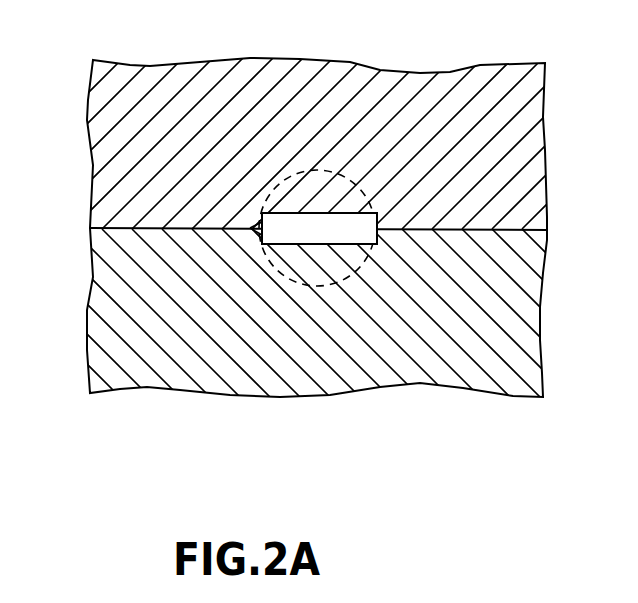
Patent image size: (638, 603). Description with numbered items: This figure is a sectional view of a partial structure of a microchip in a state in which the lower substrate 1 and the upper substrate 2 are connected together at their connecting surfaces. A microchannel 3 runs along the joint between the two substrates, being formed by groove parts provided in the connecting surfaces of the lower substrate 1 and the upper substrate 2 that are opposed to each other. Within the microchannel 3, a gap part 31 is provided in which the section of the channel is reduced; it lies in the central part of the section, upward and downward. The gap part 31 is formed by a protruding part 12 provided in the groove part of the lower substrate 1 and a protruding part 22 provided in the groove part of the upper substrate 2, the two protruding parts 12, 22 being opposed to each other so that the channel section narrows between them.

The lower substrate 1 is at (319, 319).
The upper substrate 2 is at (319, 139).
The microchannel 3 is at (318, 159).
The protruding part 12 is at (319, 342).
The protruding part 22 is at (319, 122).
The gap part 31 is at (431, 220).